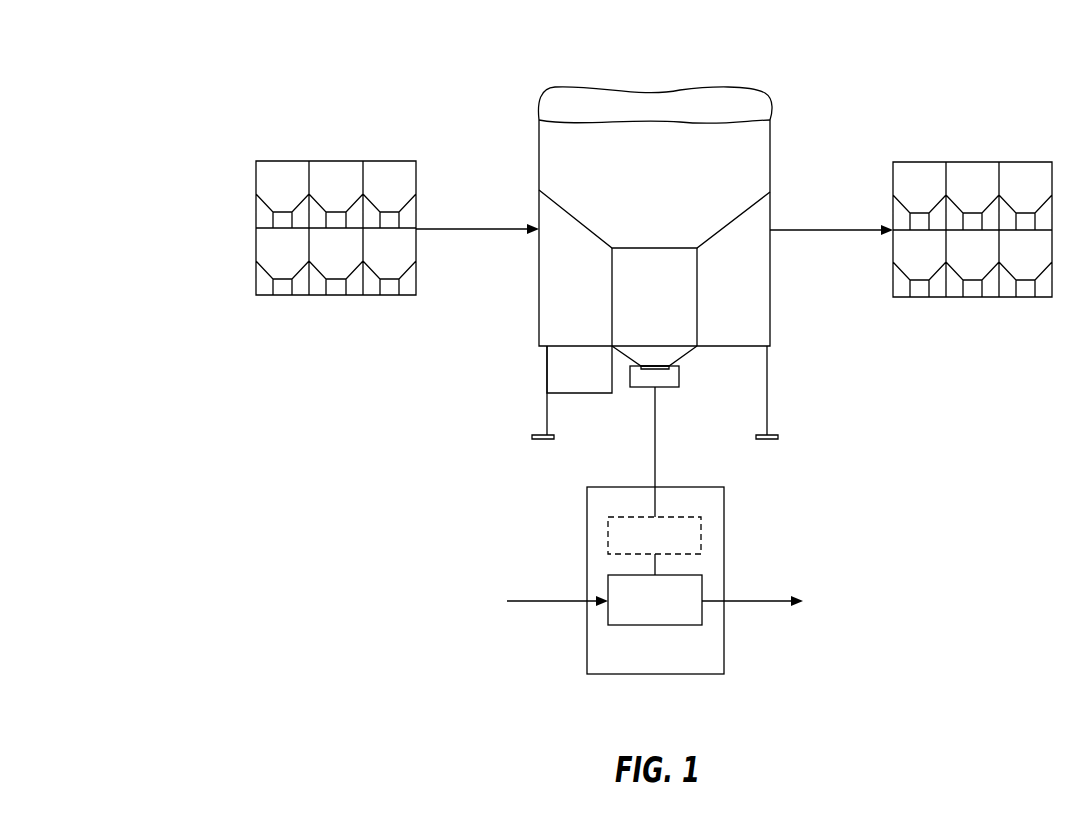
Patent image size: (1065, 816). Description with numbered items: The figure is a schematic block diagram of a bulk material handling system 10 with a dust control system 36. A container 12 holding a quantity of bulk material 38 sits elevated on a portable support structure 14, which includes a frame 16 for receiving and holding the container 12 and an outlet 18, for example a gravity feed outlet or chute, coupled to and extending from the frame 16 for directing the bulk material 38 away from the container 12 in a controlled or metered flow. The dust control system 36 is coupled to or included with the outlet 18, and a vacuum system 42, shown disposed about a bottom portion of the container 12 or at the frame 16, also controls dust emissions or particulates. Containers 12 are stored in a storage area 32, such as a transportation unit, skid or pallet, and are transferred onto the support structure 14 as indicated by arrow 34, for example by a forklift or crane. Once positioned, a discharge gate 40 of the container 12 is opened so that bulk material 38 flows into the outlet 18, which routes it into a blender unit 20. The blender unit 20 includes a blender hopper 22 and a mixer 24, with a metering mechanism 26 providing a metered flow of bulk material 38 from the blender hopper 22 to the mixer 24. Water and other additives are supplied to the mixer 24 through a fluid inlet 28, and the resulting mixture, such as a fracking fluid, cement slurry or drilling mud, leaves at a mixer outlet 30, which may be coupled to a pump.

The bulk material handling system 10 is at (255, 47).
The container 12 is at (771, 213).
The portable support structure 14 is at (498, 355).
The frame 16 is at (772, 391).
The outlet 18 is at (656, 428).
The blender unit 20 is at (724, 520).
The blender hopper 22 is at (608, 535).
The mixer 24 is at (608, 610).
The metering mechanism 26 is at (655, 572).
The fluid inlet 28 is at (535, 600).
The mixer outlet 30 is at (750, 603).
The storage area 32 is at (393, 150).
The arrow 34 is at (465, 227).
The dust control system 36 is at (660, 388).
The bulk material 38 is at (684, 87).
The discharge gate 40 is at (648, 365).
The vacuum system 42 is at (596, 382).